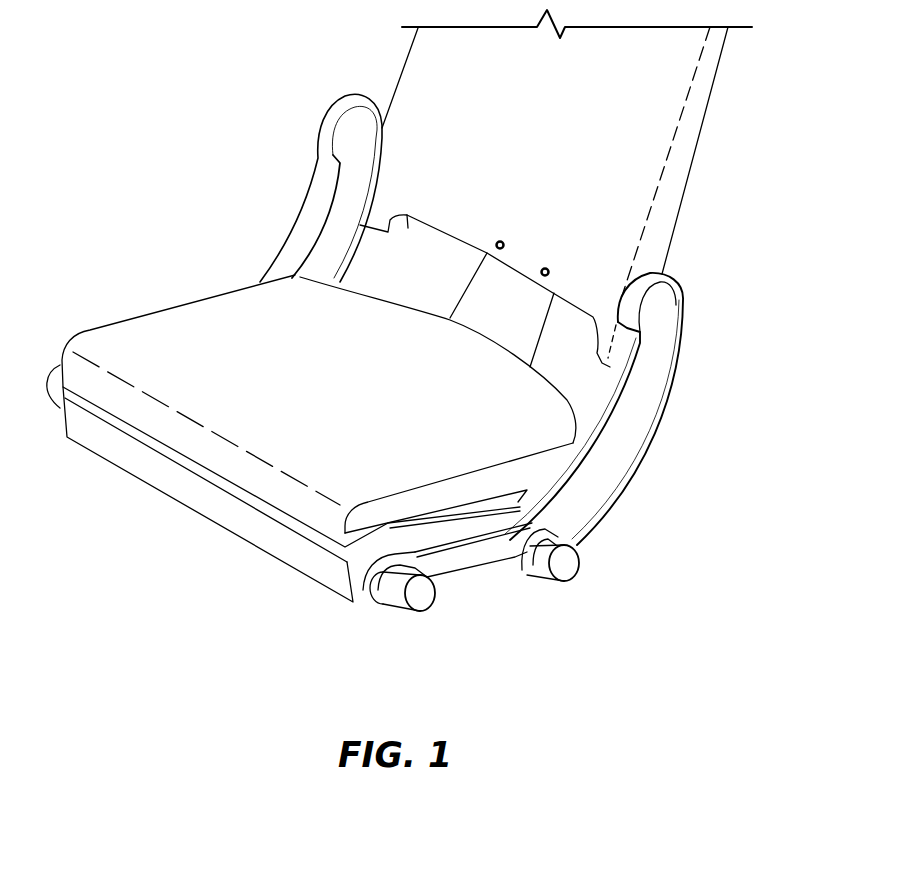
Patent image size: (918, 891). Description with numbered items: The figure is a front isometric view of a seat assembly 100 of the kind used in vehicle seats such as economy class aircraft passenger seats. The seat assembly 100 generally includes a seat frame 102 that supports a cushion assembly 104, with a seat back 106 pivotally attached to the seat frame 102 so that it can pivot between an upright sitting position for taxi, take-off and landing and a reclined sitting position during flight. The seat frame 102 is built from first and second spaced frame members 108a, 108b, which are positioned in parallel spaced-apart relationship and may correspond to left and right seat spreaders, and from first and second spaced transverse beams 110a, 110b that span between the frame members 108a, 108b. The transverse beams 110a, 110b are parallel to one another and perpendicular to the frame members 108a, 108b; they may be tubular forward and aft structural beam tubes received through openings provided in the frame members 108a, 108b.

The seat assembly 100 is at (134, 221).
The seat frame 102 is at (598, 520).
The cushion assembly 104 is at (97, 330).
The seat back 106 is at (692, 163).
The first frame member 108a is at (613, 477).
The second frame member 108b is at (317, 248).
The first transverse beam 110a is at (427, 600).
The second transverse beam 110b is at (563, 572).